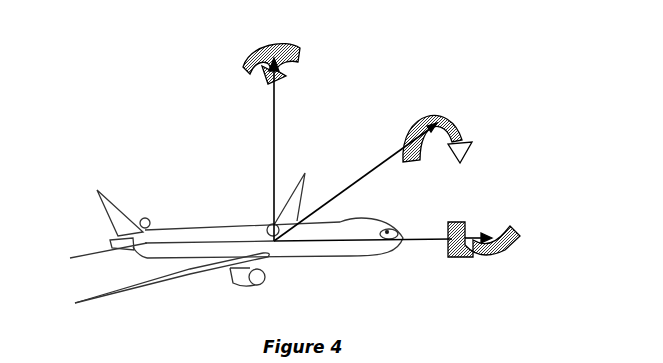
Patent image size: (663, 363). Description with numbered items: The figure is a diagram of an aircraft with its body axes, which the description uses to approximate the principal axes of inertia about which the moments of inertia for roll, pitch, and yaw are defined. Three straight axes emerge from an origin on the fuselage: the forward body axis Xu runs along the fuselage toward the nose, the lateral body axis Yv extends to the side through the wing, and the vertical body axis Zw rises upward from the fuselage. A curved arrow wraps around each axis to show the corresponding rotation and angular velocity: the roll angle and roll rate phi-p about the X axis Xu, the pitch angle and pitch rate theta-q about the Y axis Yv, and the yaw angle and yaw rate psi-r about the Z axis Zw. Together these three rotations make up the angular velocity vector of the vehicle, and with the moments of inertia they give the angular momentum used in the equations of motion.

The Z body axis with vertical velocity w Zw is at (252, 107).
The Y body axis with lateral velocity v Yv is at (355, 179).
The X body axis with forward velocity u Xu is at (383, 251).
The yaw angle and yaw rate psi-r is at (271, 51).
The pitch angle and pitch rate theta-q is at (437, 128).
The roll angle and roll rate phi-p is at (499, 242).